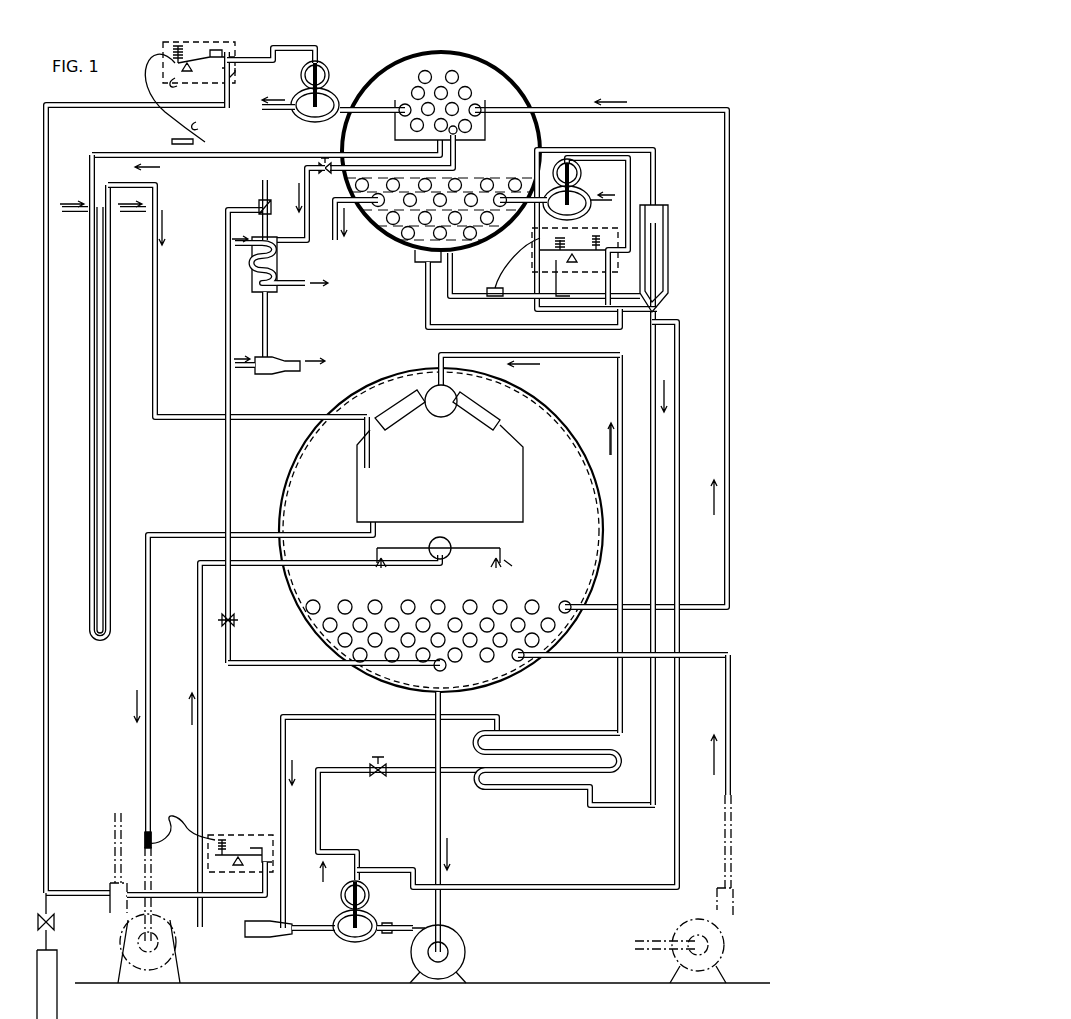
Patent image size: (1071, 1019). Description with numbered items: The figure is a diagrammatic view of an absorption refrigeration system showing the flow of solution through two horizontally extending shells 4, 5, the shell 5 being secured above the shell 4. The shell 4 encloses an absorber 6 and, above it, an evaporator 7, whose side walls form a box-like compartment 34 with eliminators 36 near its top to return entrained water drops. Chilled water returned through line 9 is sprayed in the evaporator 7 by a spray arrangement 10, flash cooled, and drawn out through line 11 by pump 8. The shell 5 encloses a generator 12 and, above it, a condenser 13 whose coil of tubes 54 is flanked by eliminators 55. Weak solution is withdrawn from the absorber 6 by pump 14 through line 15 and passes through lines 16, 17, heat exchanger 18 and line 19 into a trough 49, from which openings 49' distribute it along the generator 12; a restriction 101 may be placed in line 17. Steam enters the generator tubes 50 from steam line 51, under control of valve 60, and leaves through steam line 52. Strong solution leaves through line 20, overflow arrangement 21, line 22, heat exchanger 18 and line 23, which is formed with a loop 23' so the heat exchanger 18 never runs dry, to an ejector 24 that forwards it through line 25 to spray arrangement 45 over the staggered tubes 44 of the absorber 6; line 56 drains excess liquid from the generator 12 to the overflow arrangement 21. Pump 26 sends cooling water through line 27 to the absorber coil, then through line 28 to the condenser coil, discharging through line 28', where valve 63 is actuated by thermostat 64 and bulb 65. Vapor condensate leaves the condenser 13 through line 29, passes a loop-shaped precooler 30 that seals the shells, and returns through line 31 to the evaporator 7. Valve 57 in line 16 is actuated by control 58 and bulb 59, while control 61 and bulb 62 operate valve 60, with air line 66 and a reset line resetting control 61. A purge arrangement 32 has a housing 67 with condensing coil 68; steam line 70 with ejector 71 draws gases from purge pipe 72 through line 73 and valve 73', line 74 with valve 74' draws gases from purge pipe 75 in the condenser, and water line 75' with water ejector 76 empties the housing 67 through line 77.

The shell 4 is at (298, 446).
The shell 5 is at (488, 68).
The absorber arrangement 6 is at (523, 662).
The evaporator arrangement 7 is at (518, 470).
The pump 8 is at (118, 932).
The line 9 is at (552, 362).
The spray arrangement 10 is at (446, 416).
The line 11 is at (145, 741).
The generator arrangement 12 is at (375, 221).
The condenser arrangement 13 is at (478, 96).
The pump 14 is at (465, 952).
The line 15 is at (441, 807).
The line 16 is at (382, 938).
The line 17 is at (318, 801).
The heat exchanger 18 is at (528, 790).
The line 19 is at (617, 361).
The line 20 is at (490, 276).
The overflow arrangement 21 is at (665, 246).
The line 22 is at (660, 484).
The line 23 is at (371, 822).
The loop 23' is at (499, 705).
The ejector 24 is at (268, 937).
The line 25 is at (203, 789).
The pump 26 is at (720, 947).
The line 27 is at (730, 730).
The line 28 is at (405, 472).
The line 28' is at (266, 118).
The line 29 is at (100, 153).
The precooler assembly 30 is at (88, 310).
The line 31 is at (156, 386).
The purge arrangement 32 is at (280, 259).
The compartment 34 is at (362, 472).
The eliminators 36 is at (496, 421).
The tubes 44 is at (312, 611).
The spray arrangement 45 is at (445, 556).
The trough 49 is at (501, 288).
The openings 49' is at (423, 280).
The tubes 50 is at (514, 179).
The steam line 51 is at (512, 210).
The steam line 52 is at (348, 234).
The tubes 54 is at (472, 128).
The eliminators 55 is at (385, 107).
The line 56 is at (632, 149).
The valve 57 is at (334, 939).
The control 58 is at (242, 832).
The bulb 59 is at (152, 834).
The valve 60 is at (583, 177).
The control 61 is at (600, 232).
The bulb 62 is at (490, 286).
The valve 63 is at (303, 121).
The thermostat 64 is at (199, 47).
The bulb 65 is at (186, 139).
The air line 66 is at (280, 48).
The housing 67 is at (254, 290).
The condensing coil 68 is at (286, 282).
The steam line 70 is at (263, 190).
The ejector 71 is at (259, 210).
The purge pipe 72 is at (447, 668).
The line 73 is at (245, 436).
The valve 73' is at (241, 609).
The line 74 is at (299, 204).
The valve 74' is at (320, 180).
The purge pipe 75 is at (406, 147).
The auxiliary water line 75' is at (247, 378).
The water ejector 76 is at (282, 374).
The line 77 is at (271, 332).
The restriction 101 is at (376, 764).